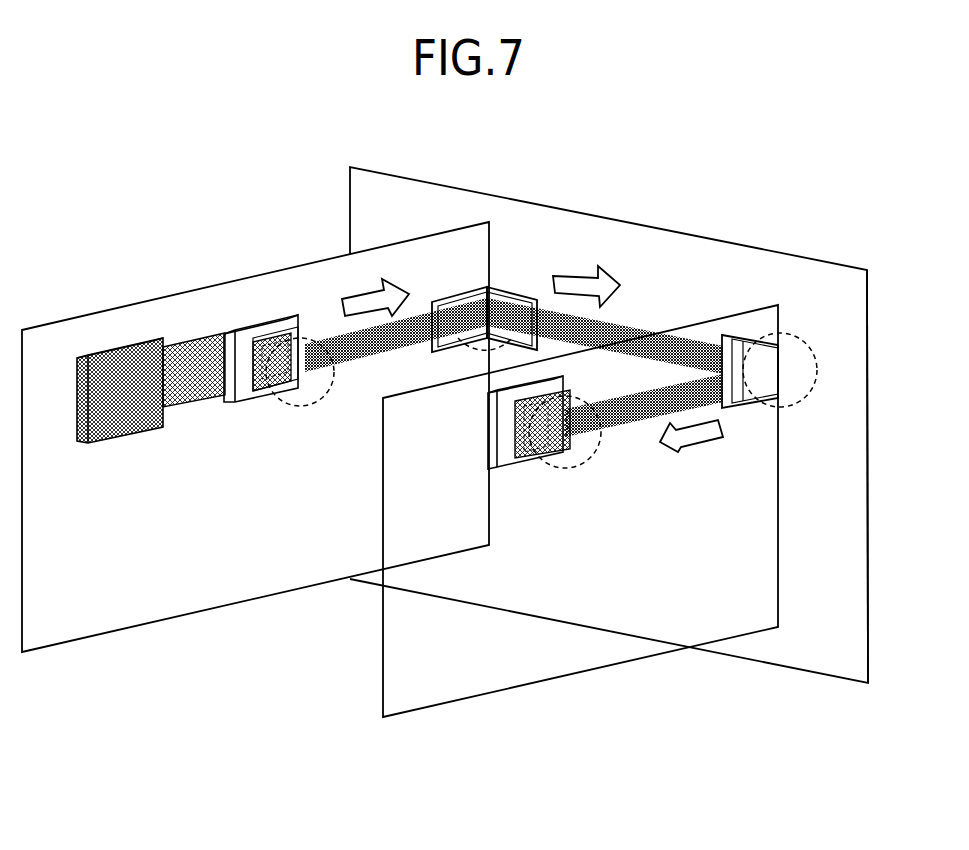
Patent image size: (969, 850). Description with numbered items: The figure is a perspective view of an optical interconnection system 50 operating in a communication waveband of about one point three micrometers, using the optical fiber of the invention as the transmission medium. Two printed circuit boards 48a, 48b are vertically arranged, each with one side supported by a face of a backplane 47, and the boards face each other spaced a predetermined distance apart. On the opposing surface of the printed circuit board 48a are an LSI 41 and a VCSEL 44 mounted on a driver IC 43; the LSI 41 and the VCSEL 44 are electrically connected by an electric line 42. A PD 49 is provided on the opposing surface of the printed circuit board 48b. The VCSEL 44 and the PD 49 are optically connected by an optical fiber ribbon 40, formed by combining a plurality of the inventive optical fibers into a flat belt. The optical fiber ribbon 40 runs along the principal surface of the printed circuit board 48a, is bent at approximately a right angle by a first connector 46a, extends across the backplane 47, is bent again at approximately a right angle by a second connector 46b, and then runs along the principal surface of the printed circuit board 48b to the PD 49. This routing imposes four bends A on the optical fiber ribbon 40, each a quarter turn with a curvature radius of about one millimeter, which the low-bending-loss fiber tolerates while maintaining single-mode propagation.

The optical fiber ribbon 40 is at (332, 338).
The LSI 41 is at (117, 346).
The electric line 42 is at (197, 340).
The driver IC 43 is at (247, 328).
The VCSEL 44 is at (302, 335).
The first connector 46a is at (460, 294).
The second connector 46b is at (778, 333).
The backplane 47 is at (820, 292).
The printed circuit board 48a is at (108, 612).
The printed circuit board 48b is at (412, 688).
The PD 49 is at (517, 462).
The optical interconnection system 50 is at (510, 157).
The bend A is at (308, 402).